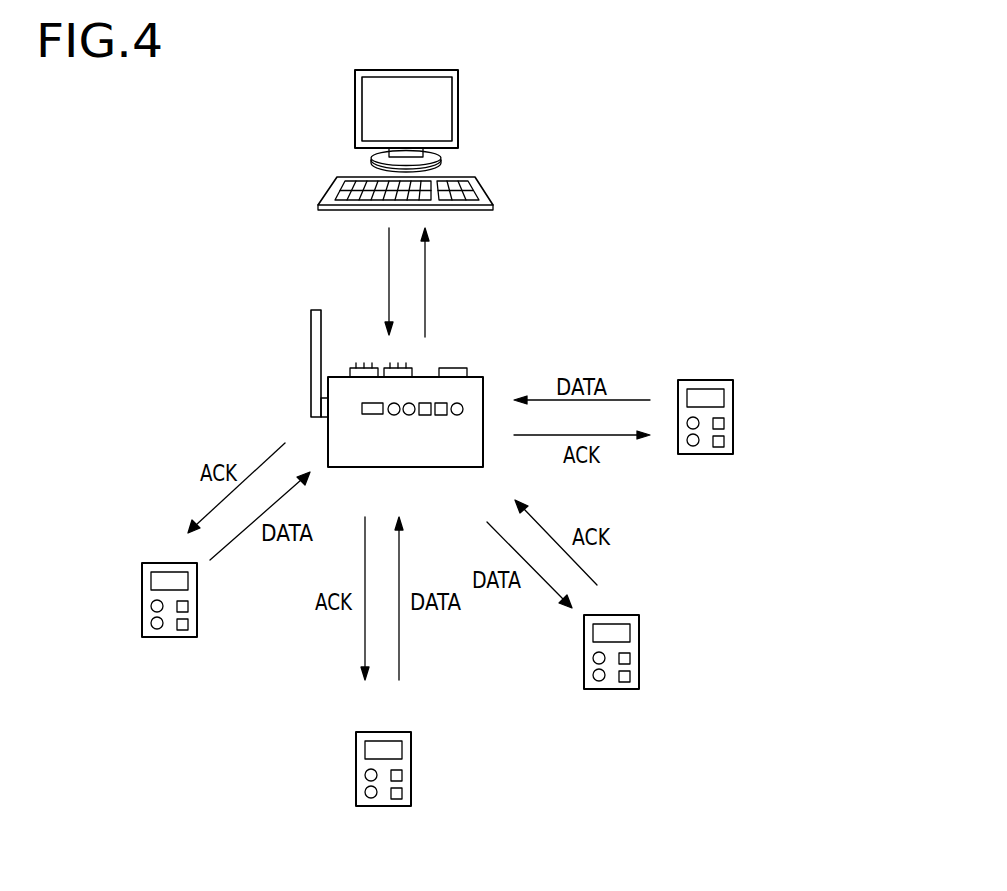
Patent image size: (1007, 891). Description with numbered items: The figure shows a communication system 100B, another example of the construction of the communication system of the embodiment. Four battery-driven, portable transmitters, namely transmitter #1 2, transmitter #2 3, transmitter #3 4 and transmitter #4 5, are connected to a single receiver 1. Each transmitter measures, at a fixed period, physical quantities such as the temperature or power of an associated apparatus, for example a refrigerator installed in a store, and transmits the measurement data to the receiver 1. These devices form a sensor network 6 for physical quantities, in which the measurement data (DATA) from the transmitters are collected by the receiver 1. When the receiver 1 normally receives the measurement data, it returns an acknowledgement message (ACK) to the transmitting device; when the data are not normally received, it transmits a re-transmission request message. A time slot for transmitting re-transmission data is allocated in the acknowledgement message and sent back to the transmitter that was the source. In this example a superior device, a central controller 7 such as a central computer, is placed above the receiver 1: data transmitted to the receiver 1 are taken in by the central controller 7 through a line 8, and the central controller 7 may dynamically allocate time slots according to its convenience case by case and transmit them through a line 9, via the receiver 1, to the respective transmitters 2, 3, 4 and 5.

The receiver 1 is at (475, 377).
The transmitter #1 2 is at (733, 418).
The transmitter #2 3 is at (637, 652).
The transmitter #3 4 is at (408, 768).
The transmitter #4 5 is at (196, 600).
The sensor network 6 is at (600, 569).
The central controller 7 is at (460, 108).
The line 8 is at (387, 297).
The line 9 is at (427, 297).
The communication system 100B is at (241, 762).